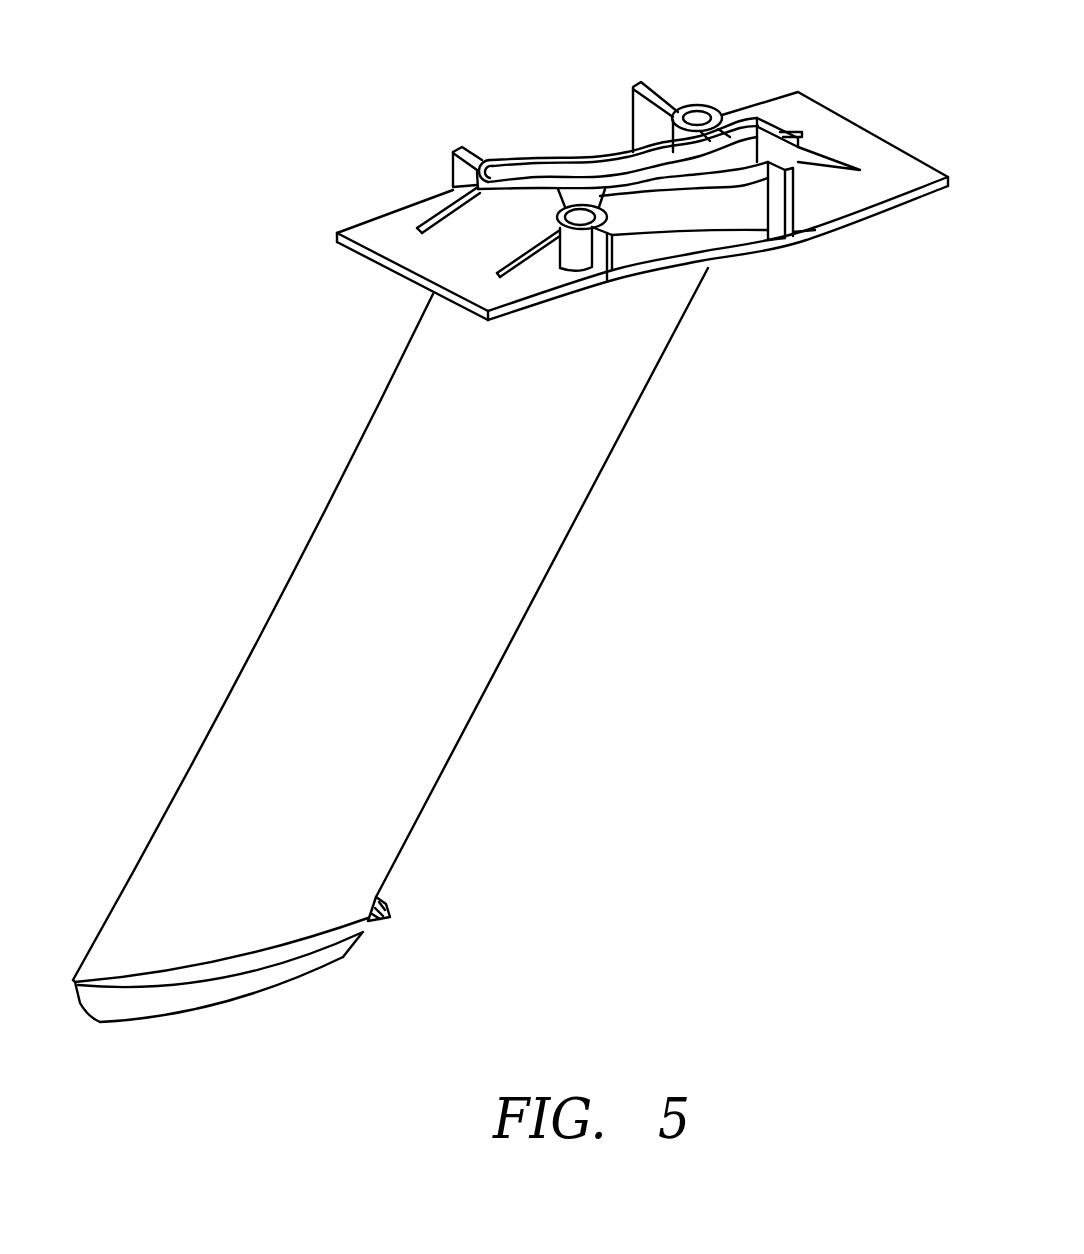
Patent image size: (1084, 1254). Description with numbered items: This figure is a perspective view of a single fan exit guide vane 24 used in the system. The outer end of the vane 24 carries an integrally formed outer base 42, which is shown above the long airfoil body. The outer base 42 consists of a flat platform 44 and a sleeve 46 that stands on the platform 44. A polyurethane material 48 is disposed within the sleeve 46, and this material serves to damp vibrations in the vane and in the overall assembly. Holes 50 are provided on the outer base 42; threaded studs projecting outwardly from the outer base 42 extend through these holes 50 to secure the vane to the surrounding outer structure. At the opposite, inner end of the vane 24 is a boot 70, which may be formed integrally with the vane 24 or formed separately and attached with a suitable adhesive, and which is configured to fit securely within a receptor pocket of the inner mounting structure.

The fan exit guide vane 24 is at (288, 557).
The outer base 42 is at (874, 124).
The platform 44 is at (360, 223).
The sleeve 46 is at (707, 225).
The polyurethane material 48 is at (757, 118).
The holes 50 is at (576, 214).
The boot 70 is at (347, 948).